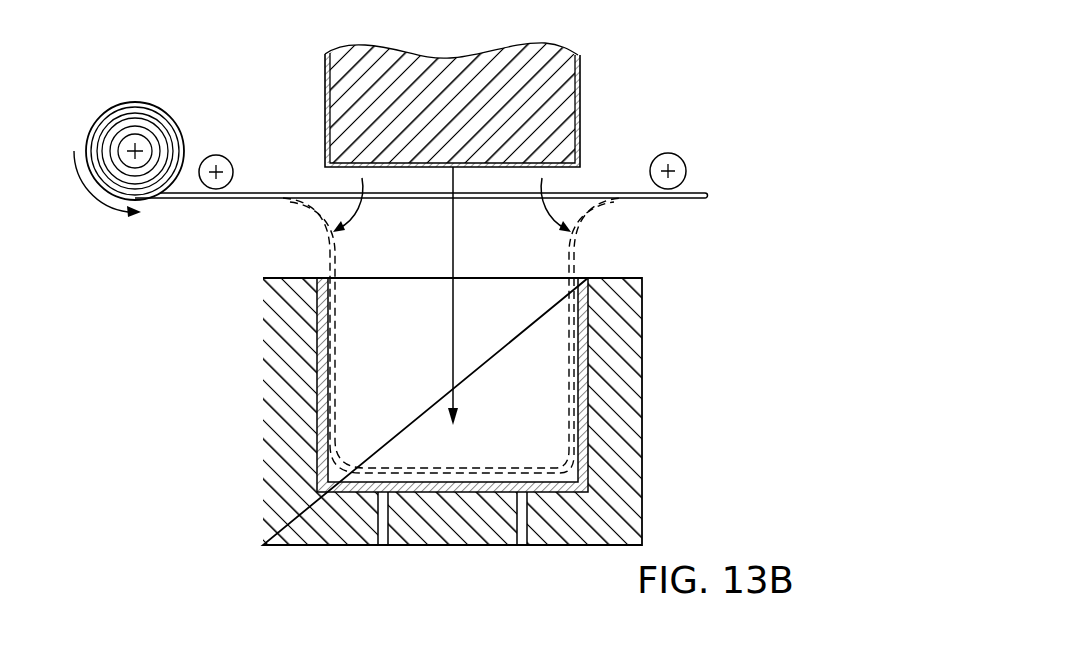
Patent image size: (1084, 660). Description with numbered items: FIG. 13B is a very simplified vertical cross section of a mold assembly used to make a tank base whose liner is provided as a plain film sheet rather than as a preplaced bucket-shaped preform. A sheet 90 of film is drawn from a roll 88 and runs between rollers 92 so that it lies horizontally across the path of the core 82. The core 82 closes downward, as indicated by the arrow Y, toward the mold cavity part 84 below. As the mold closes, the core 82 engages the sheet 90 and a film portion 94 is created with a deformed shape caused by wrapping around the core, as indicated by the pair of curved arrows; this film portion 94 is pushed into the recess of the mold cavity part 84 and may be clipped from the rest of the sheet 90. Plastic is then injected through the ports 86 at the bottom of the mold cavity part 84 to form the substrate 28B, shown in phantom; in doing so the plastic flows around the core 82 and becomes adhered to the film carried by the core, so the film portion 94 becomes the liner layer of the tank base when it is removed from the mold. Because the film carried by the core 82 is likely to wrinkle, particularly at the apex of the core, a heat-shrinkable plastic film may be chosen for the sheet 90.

The core 82 is at (521, 58).
The mold cavity part 84 is at (628, 465).
The ports 86 is at (386, 547).
The roll 88 is at (136, 99).
The sheet of film 90 is at (399, 199).
The rollers 92 is at (219, 155).
The film portion 94 is at (337, 352).
The substrate 28B is at (589, 395).
The arrow Y is at (456, 252).